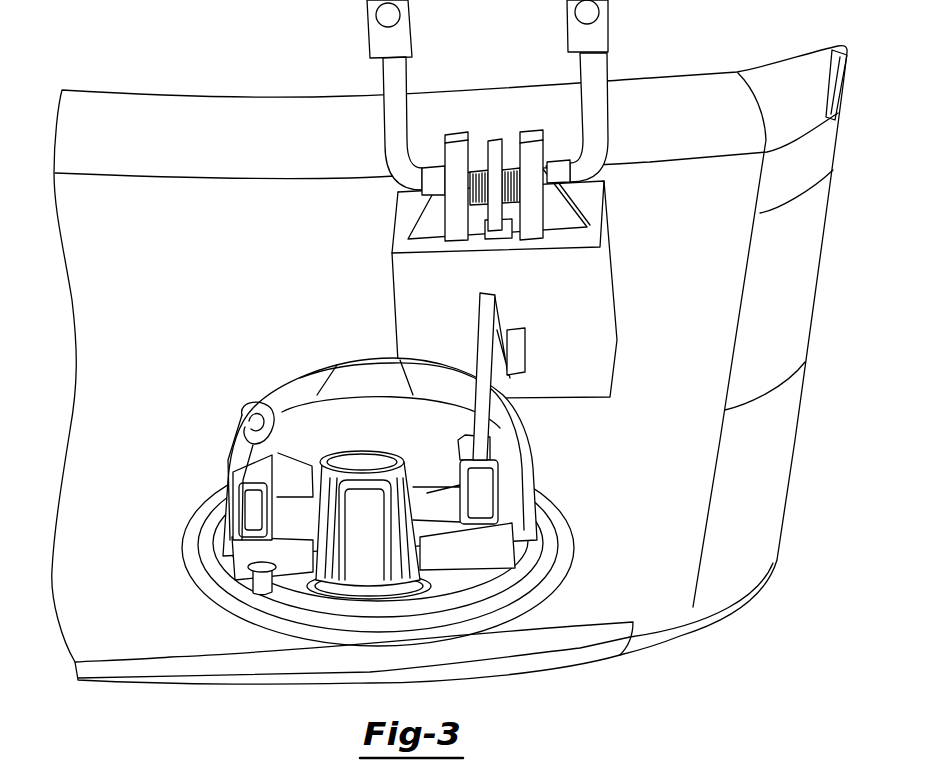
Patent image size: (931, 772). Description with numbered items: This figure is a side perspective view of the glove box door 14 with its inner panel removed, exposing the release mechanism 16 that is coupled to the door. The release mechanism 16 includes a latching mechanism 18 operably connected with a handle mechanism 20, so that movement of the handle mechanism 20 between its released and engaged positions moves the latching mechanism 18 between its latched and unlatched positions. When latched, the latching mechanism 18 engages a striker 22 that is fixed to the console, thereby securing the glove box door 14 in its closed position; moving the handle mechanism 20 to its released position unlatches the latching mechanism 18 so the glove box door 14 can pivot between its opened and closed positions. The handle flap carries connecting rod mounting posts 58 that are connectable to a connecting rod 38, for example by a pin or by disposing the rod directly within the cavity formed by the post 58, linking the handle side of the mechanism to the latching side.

The glove box door 14 is at (166, 86).
The release mechanism 16 is at (375, 388).
The latching mechanism 18 is at (368, 266).
The handle mechanism 20 is at (208, 476).
The striker 22 is at (608, 37).
The connecting rod 38 is at (480, 322).
The connecting rod mounting post 58 is at (495, 470).